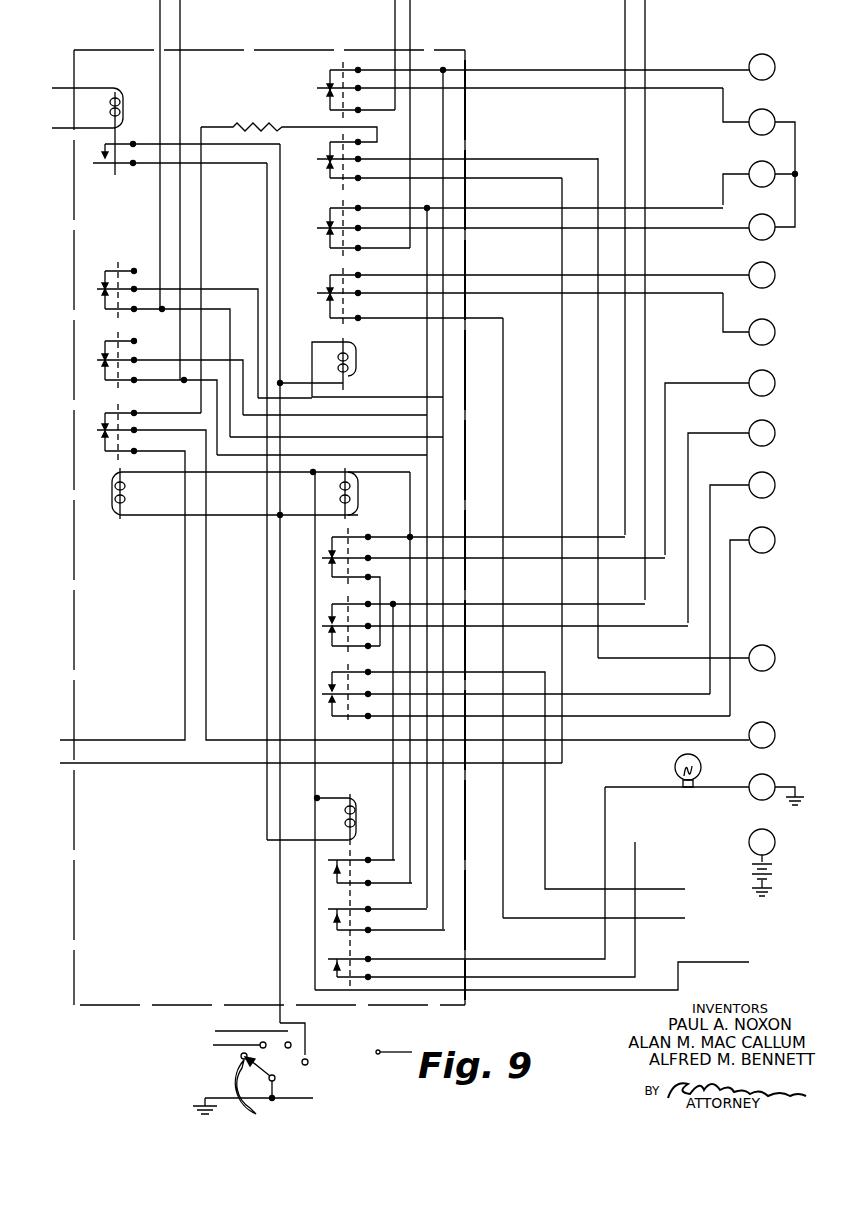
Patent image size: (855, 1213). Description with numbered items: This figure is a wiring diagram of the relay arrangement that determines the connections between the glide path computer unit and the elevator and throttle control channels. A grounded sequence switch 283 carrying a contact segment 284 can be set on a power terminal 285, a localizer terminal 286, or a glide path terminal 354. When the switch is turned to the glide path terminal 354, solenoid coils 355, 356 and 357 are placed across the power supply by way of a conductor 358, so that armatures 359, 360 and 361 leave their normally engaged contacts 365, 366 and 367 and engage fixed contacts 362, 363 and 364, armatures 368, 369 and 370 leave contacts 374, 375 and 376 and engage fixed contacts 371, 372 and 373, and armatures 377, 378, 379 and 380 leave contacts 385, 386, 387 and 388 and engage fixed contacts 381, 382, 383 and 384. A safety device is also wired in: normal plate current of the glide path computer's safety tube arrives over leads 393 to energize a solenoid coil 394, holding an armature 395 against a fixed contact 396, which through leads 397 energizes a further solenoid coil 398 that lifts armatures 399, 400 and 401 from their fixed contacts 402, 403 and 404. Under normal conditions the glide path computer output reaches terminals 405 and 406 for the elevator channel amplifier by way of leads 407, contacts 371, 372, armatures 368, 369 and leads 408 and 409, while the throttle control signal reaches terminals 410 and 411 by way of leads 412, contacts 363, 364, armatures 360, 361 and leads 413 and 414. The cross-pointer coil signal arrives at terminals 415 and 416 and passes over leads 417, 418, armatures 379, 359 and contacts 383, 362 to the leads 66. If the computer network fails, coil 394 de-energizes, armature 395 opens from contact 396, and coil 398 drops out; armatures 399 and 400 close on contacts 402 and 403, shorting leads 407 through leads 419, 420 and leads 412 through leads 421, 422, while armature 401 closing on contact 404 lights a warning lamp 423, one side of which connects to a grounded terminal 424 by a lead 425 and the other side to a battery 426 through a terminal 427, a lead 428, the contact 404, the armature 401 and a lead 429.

The leads 66 is at (150, 763).
The sequence switch 283 is at (276, 1076).
The contact segment 284 is at (235, 1086).
The power terminal 285 is at (238, 1053).
The localizer terminal 286 is at (292, 1045).
The glide path terminal 354 is at (310, 1062).
The solenoid coil 355 is at (127, 490).
The solenoid coil 356 is at (352, 490).
The solenoid coil 357 is at (352, 360).
The conductor 358 is at (280, 897).
The armature 359 is at (136, 430).
The armature 360 is at (136, 361).
The armature 361 is at (134, 289).
The fixed contact 362 is at (102, 442).
The fixed contact 363 is at (102, 374).
The fixed contact 364 is at (102, 304).
The contact 365 is at (102, 428).
The contact 366 is at (102, 358).
The contact 367 is at (102, 284).
The armature 368 is at (358, 557).
The armature 369 is at (344, 624).
The armature 370 is at (344, 694).
The fixed contact 371 is at (330, 544).
The fixed contact 372 is at (330, 611).
The fixed contact 373 is at (330, 679).
The contact 374 is at (350, 567).
The contact 375 is at (340, 635).
The contact 376 is at (326, 706).
The armature 377 is at (352, 300).
The armature 378 is at (352, 232).
The armature 379 is at (352, 162).
The armature 380 is at (350, 92).
The fixed contact 381 is at (324, 312).
The fixed contact 382 is at (326, 240).
The fixed contact 383 is at (326, 174).
The fixed contact 384 is at (326, 100).
The contact 385 is at (326, 296).
The contact 386 is at (326, 222).
The contact 387 is at (326, 158).
The contact 388 is at (326, 84).
The leads 393 is at (87, 108).
The solenoid coil 394 is at (124, 102).
The armature 395 is at (102, 164).
The fixed contact 396 is at (104, 156).
The leads 397 is at (280, 208).
The solenoid coil 398 is at (356, 807).
The armature 399 is at (358, 860).
The armature 400 is at (360, 907).
The armature 401 is at (360, 953).
The fixed contact 402 is at (328, 872).
The fixed contact 403 is at (328, 918).
The fixed contact 404 is at (346, 964).
The terminal 405 is at (764, 372).
The terminal 406 is at (764, 422).
The leads 407 is at (645, 30).
The lead 408 is at (625, 551).
The lead 409 is at (638, 623).
The terminal 410 is at (758, 54).
The terminal 411 is at (764, 164).
The leads 412 is at (170, 20).
The lead 413 is at (443, 398).
The lead 414 is at (400, 420).
The terminal 415 is at (768, 644).
The terminal 416 is at (768, 720).
The lead 417 is at (600, 433).
The lead 418 is at (632, 737).
The lead 419 is at (394, 657).
The lead 420 is at (408, 575).
The lead 421 is at (465, 482).
The lead 422 is at (410, 677).
The warning lamp 423 is at (675, 770).
The grounded terminal 424 is at (770, 776).
The lead 425 is at (730, 790).
The battery 426 is at (754, 870).
The terminal 427 is at (756, 832).
The lead 428 is at (636, 962).
The lead 429 is at (605, 840).